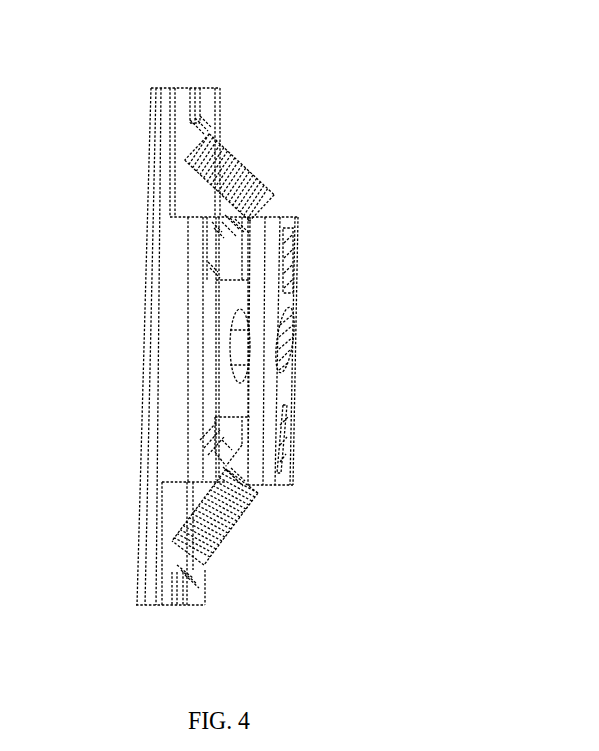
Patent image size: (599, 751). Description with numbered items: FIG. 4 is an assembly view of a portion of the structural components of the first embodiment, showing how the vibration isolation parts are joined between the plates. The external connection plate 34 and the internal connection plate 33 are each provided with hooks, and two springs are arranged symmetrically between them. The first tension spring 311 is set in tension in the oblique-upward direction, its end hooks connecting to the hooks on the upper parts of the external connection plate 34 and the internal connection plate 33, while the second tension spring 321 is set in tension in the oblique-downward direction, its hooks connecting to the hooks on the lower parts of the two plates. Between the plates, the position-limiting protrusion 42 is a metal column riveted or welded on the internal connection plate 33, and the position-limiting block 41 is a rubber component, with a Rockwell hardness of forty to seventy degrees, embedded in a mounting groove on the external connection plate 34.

The external connection plate 34 is at (167, 277).
The position-limiting block 41 is at (207, 399).
The position-limiting protrusion 42 is at (240, 347).
The internal connection plate 33 is at (277, 333).
The first tension spring 311 is at (231, 181).
The second tension spring 321 is at (235, 532).